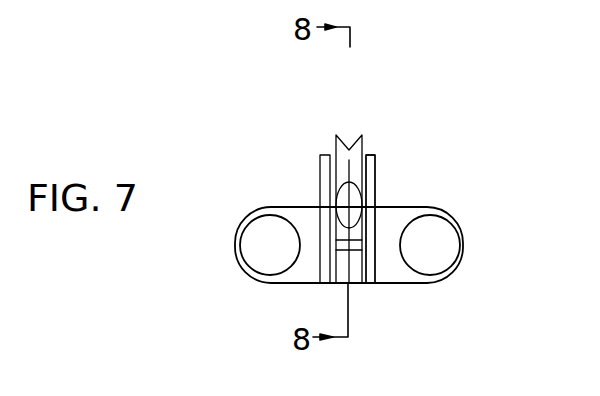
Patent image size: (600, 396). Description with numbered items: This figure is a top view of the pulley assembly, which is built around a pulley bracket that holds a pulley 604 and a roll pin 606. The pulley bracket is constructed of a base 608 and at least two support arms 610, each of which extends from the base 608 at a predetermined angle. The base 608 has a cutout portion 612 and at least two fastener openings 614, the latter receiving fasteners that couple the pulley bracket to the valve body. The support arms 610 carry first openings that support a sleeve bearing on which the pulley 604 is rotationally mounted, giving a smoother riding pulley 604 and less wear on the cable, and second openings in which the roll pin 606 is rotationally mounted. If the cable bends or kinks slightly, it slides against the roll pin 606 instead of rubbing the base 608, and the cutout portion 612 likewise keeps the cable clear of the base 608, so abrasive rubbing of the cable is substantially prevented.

The pulley 604 is at (357, 134).
The roll pin 606 is at (376, 202).
The base 608 is at (246, 277).
The support arm 610 is at (320, 155).
The cutout portion 612 is at (319, 202).
The fastener opening 614 is at (258, 246).